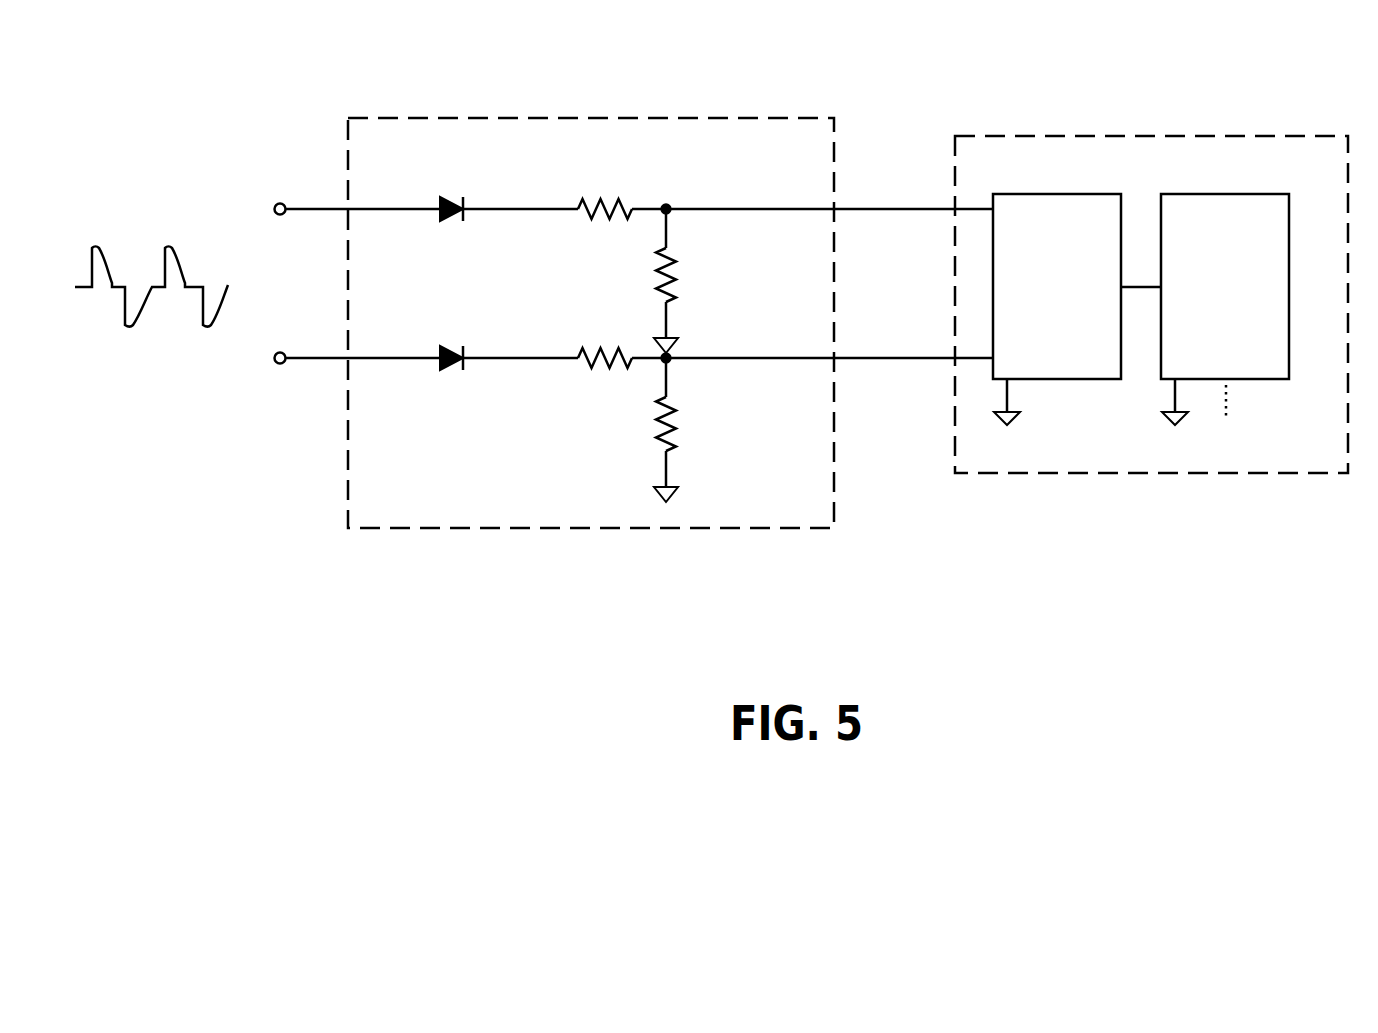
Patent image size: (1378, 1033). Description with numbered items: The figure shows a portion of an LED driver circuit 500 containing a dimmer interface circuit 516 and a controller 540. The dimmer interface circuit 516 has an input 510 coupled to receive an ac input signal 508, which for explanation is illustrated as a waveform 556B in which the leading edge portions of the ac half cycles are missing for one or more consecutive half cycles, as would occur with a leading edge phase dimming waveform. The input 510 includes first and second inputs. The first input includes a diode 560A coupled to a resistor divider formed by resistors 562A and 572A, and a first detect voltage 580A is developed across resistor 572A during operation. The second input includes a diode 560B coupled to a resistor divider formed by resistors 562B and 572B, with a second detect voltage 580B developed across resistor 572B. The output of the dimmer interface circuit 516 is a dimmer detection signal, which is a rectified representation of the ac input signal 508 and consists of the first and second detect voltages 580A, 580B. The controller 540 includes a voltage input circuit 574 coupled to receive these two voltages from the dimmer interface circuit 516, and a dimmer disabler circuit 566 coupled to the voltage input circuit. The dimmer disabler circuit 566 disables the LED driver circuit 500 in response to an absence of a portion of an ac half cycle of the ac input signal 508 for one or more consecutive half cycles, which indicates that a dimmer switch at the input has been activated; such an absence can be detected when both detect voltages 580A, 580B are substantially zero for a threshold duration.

The LED driver circuit 500 is at (1316, 43).
The ac input signal VDIM 508 is at (237, 258).
The input 510 is at (279, 203).
The waveform 556B is at (150, 325).
The dimmer interface circuit 516 is at (750, 528).
The diode 560A is at (457, 198).
The diode 560B is at (457, 348).
The resistor 562A is at (592, 200).
The resistor 562B is at (592, 350).
The resistor 572A is at (656, 290).
The resistor 572B is at (656, 440).
The voltage VDETECT1 580A is at (716, 266).
The voltage VDETECT2 580B is at (716, 426).
The controller 540 is at (1160, 333).
The voltage input circuit 574 is at (1048, 379).
The dimmer disabler circuit 566 is at (1263, 379).